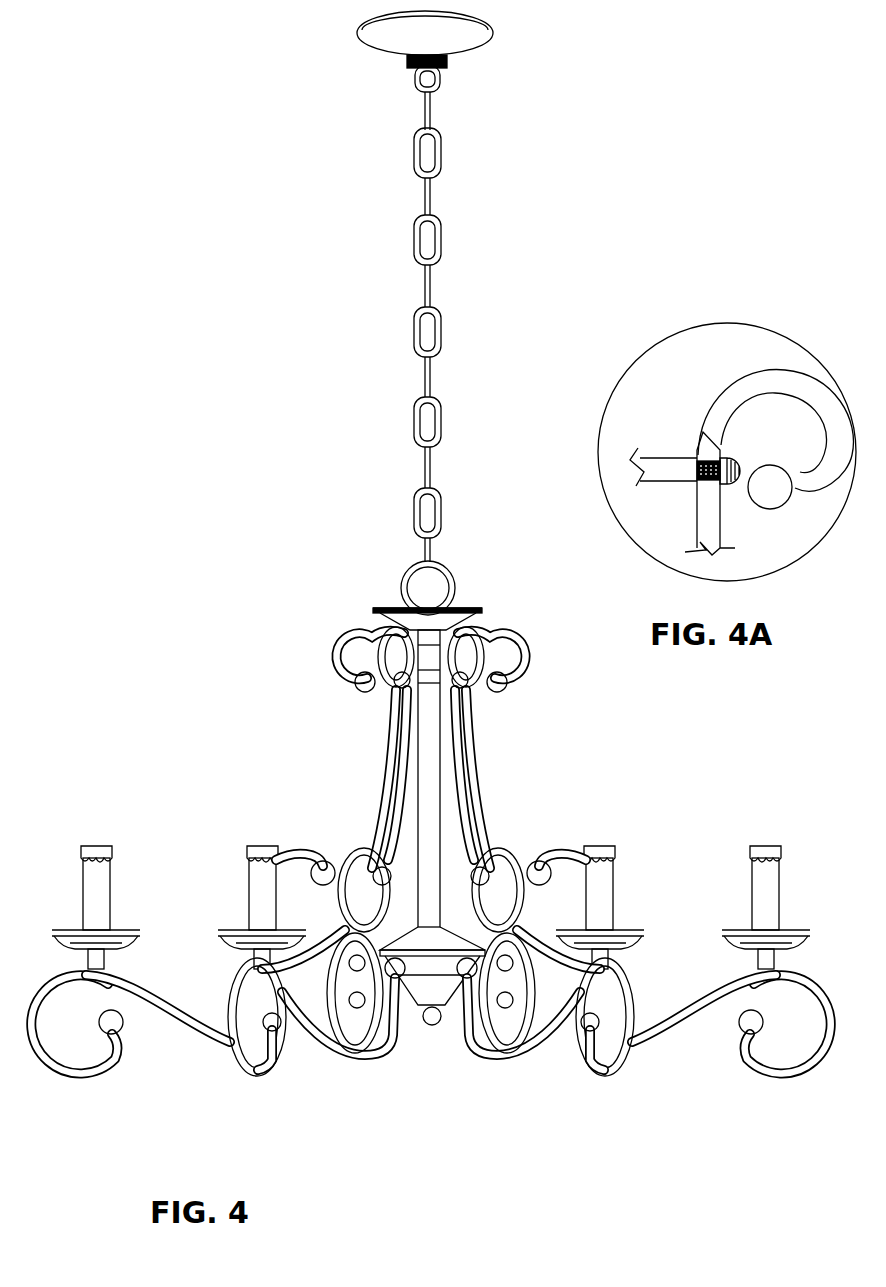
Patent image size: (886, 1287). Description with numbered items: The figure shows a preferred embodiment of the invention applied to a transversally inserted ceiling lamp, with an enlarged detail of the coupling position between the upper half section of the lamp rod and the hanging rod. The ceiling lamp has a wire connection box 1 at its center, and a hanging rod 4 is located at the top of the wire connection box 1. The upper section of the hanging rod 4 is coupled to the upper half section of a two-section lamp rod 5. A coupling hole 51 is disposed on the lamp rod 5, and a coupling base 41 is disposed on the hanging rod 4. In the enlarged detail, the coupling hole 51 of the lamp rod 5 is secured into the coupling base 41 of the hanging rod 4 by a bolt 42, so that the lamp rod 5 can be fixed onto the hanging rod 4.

In FIG. 4, the wire connection box 1 is at (432, 972).
In FIG. 4A, the hanging rod 4 is at (637, 480).
In FIG. 4A, the coupling base 41 is at (660, 472).
In FIG. 4A, the bolt 42 is at (730, 482).
In FIG. 4A, the lamp rod 5 is at (810, 390).
In FIG. 4A, the coupling hole 51 is at (705, 458).